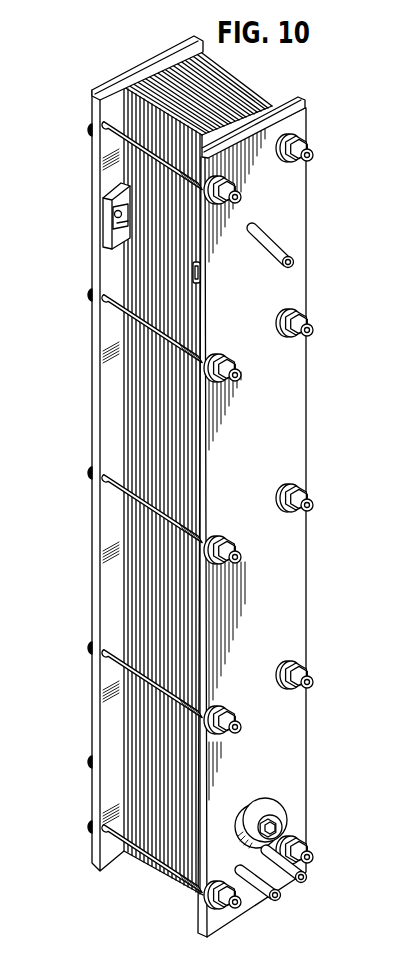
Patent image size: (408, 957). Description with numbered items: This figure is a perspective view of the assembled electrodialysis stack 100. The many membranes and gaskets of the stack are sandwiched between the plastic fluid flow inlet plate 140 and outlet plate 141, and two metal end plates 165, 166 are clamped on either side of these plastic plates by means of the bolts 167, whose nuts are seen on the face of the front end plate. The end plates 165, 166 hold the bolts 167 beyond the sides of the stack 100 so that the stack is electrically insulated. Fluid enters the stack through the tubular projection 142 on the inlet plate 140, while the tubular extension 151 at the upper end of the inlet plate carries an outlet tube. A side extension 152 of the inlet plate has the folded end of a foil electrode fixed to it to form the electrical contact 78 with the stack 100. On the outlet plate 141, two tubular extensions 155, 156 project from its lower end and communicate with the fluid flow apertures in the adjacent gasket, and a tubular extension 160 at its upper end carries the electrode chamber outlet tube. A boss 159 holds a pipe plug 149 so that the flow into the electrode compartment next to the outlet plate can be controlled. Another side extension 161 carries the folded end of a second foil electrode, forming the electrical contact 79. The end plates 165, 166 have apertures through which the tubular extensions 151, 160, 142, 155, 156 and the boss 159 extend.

The electrical contact 78 is at (101, 218).
The electrical contact 79 is at (203, 277).
The stack 100 is at (296, 421).
The inlet plate 140 is at (126, 436).
The outlet plate 141 is at (261, 112).
The tubular projection 142 is at (89, 762).
The pipe plug 149 is at (258, 844).
The tubular extension 151 is at (86, 133).
The side extension 152 is at (127, 193).
The tubular extension 155 is at (291, 879).
The tubular extension 156 is at (274, 900).
The boss 159 is at (277, 774).
The tubular extension 160 is at (269, 250).
The side extension 161 is at (191, 258).
The end plate 165 is at (175, 50).
The end plate 166 is at (295, 118).
The bolts 167 is at (309, 155).